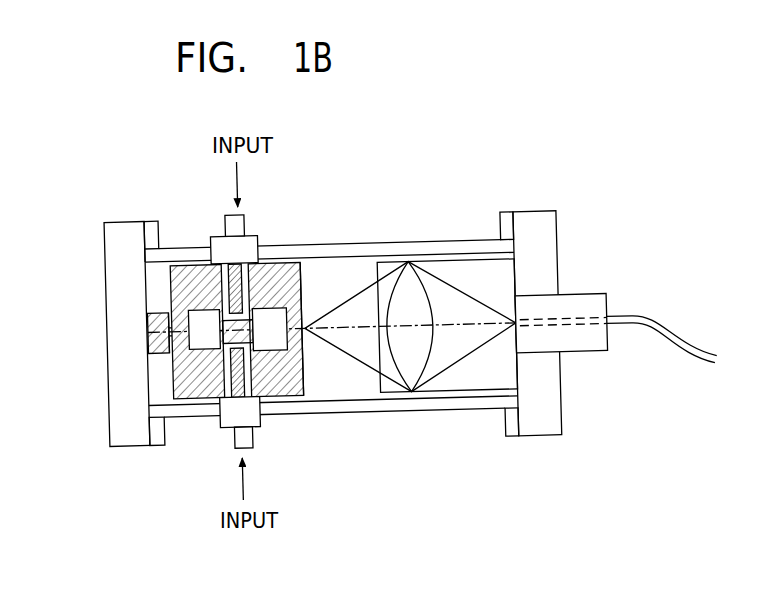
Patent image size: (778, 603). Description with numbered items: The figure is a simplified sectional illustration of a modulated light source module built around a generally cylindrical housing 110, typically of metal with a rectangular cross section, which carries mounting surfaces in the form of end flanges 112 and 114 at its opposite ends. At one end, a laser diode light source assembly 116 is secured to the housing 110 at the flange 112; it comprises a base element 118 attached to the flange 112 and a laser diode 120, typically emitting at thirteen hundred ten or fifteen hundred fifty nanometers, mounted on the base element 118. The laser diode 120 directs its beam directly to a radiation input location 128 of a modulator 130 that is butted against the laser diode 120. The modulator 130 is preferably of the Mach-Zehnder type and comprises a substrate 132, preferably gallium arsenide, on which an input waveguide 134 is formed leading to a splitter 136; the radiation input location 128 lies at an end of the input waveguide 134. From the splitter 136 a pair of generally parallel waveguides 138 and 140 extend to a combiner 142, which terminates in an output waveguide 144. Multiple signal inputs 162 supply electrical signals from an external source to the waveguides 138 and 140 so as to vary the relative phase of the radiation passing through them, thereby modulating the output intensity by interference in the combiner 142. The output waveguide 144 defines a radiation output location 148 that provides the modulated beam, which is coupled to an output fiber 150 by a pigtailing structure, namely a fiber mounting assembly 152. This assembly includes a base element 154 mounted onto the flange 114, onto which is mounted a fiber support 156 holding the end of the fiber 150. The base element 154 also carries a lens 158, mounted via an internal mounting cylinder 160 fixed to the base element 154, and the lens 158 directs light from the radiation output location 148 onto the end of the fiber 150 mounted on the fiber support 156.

The housing 110 is at (500, 165).
The end flange 112 is at (157, 447).
The end flange 114 is at (505, 436).
The laser diode light source assembly 116 is at (96, 451).
The base element 118 is at (118, 440).
The laser diode 120 is at (165, 313).
The radiation input location 128 is at (167, 353).
The modulator 130 is at (204, 404).
The substrate 132 is at (307, 323).
The input waveguide 134 is at (187, 322).
The splitter 136 is at (200, 322).
The waveguide 138 is at (232, 428).
The waveguide 140 is at (262, 266).
The combiner 142 is at (283, 343).
The output waveguide 144 is at (305, 348).
The radiation output location 148 is at (310, 266).
The output fiber 150 is at (650, 320).
The fiber mounting assembly 152 is at (568, 223).
The base element 154 is at (535, 225).
The fiber support 156 is at (582, 302).
The lens 158 is at (400, 280).
The internal mounting cylinder 160 is at (467, 392).
The signal inputs 162 is at (223, 230).